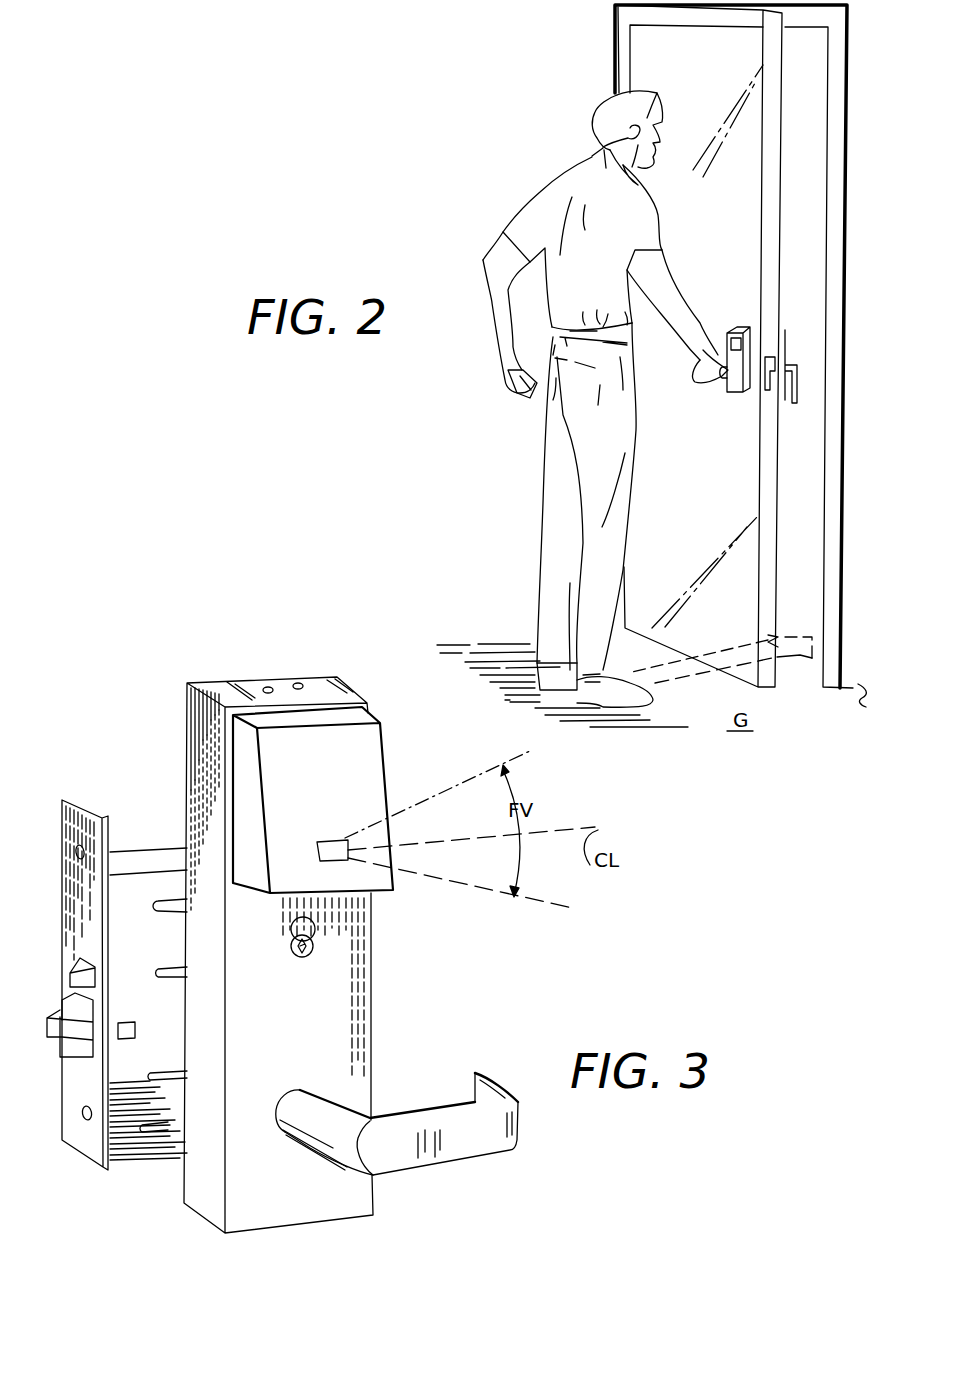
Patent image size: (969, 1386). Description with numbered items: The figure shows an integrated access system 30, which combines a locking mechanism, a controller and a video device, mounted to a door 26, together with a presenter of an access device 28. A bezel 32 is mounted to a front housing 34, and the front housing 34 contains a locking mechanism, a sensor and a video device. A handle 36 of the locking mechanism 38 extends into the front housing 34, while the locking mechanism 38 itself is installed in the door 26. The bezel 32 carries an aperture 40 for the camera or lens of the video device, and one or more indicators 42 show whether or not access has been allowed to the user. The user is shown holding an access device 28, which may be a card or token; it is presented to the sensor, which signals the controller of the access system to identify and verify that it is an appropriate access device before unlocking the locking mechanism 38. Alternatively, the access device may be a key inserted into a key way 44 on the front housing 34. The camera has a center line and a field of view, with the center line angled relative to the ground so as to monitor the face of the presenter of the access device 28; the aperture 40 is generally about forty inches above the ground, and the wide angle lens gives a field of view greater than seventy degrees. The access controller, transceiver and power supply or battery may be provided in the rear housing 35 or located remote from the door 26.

In FIG. 2, the door 26 is at (680, 71).
In FIG. 2, the access device 28 is at (532, 388).
In FIG. 2, the integrated access system 30 is at (709, 350).
In FIG. 3, the bezel 32 is at (335, 800).
In FIG. 2, the front housing 34 is at (732, 393).
In FIG. 3, the front housing 34 is at (329, 919).
In FIG. 2, the rear housing 35 is at (783, 334).
In FIG. 2, the handle 36 is at (722, 381).
In FIG. 3, the handle 36 is at (457, 1148).
In FIG. 2, the locking mechanism 38 is at (768, 398).
In FIG. 3, the locking mechanism 38 is at (148, 807).
In FIG. 3, the aperture 40 is at (323, 842).
In FIG. 3, the indicators 42 is at (297, 682).
In FIG. 3, the key way 44 is at (317, 945).